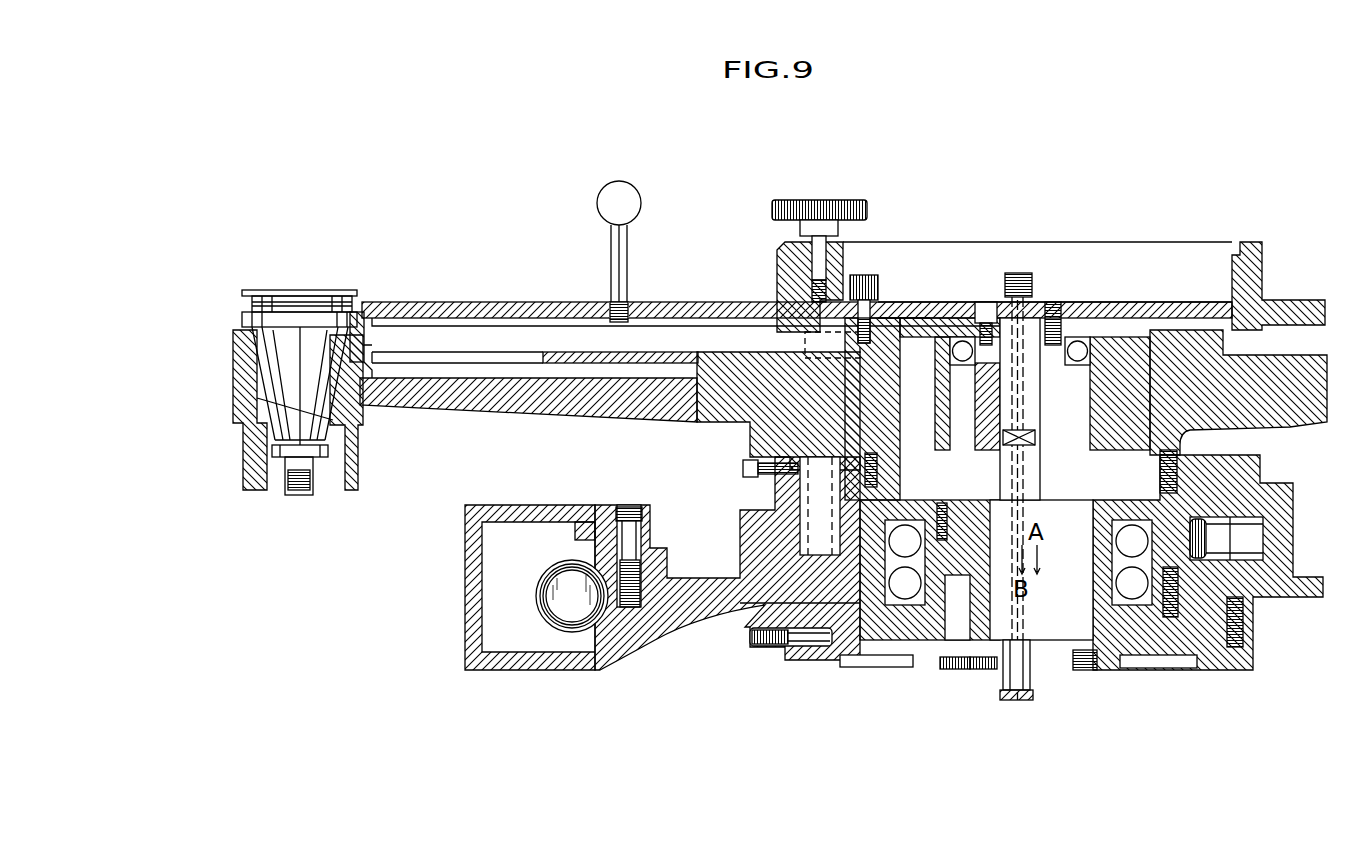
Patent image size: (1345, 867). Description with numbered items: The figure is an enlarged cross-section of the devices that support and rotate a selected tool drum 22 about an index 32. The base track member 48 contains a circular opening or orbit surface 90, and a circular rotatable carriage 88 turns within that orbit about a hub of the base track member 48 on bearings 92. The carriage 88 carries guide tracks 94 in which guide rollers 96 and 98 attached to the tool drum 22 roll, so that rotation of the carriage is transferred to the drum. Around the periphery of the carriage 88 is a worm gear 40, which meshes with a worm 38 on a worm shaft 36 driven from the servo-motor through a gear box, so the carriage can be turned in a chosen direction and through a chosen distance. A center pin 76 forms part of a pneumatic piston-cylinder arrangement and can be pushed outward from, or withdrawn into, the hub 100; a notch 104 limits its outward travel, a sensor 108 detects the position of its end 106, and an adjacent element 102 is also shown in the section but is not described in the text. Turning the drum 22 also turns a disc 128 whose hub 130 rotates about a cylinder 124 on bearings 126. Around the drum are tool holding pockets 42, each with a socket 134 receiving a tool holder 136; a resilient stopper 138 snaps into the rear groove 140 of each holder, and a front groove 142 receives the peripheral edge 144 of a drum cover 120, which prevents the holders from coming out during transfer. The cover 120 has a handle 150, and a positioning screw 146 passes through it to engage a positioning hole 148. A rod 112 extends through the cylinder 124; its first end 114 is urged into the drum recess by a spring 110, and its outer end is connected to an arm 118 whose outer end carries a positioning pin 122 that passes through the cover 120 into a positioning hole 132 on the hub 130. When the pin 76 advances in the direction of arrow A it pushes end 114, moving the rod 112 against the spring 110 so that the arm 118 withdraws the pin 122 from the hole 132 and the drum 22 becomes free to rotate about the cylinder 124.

The tool drum 22 is at (457, 395).
The index 32 is at (727, 562).
The worm shaft 36 is at (572, 603).
The worm 38 is at (538, 595).
The worm gear 40 is at (618, 610).
The tool holding pocket 42 is at (340, 447).
The base track member 48 is at (470, 577).
The center pin 76 is at (962, 665).
The rotatable carriage 88 is at (753, 590).
The orbit surface 90 is at (596, 512).
The bearings 92 is at (908, 593).
The guide tracks 94 is at (770, 537).
The guide roller 96 is at (760, 640).
The guide roller 98 is at (1247, 557).
The hub 100 is at (1046, 540).
The screw 102 is at (1078, 663).
The notch 104 is at (942, 658).
The end of pin 106 is at (1008, 672).
The sensor 108 is at (987, 662).
The spring 110 is at (1020, 338).
The rod 112 is at (1057, 302).
The first end of rod 114 is at (1065, 545).
The arm 118 is at (958, 300).
The drum cover 120 is at (447, 307).
The positioning pin 122 is at (868, 300).
The cylinder 124 is at (1105, 340).
The bearings 126 is at (1077, 350).
The disc 128 is at (568, 360).
The hub of disc 130 is at (1170, 338).
The positioning hole 132 is at (918, 297).
The socket 134 is at (262, 492).
The tool holder 136 is at (297, 353).
The resilient stopper 138 is at (271, 488).
The rear groove 140 is at (314, 472).
The front groove 142 is at (288, 298).
The peripheral edge 144 is at (363, 300).
The positioning screw 146 is at (838, 205).
The positioning hole 148 is at (808, 300).
The handle 150 is at (630, 205).